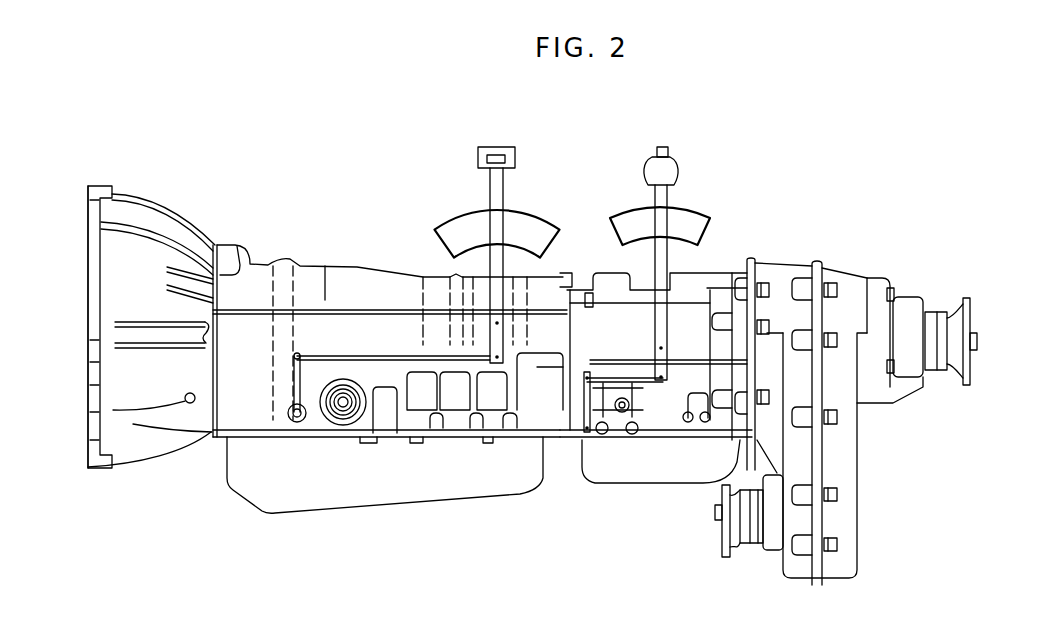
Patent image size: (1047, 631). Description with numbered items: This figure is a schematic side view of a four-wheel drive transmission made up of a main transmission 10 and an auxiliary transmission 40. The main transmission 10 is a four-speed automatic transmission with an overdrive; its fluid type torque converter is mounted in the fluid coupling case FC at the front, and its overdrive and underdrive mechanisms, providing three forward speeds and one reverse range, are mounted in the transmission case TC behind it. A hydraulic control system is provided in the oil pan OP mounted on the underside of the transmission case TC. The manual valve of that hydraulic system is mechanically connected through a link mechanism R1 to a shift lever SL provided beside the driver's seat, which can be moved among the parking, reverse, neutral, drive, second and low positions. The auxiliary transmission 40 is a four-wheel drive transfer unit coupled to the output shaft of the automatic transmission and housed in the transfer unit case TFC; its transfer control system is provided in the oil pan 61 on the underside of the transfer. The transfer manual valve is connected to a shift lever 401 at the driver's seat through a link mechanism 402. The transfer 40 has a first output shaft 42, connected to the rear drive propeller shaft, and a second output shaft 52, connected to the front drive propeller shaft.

The main transmission 10 is at (272, 193).
The fluid coupling case FC is at (142, 213).
The transmission case TC is at (358, 273).
The shift lever SL is at (503, 148).
The transfer unit case TFC is at (610, 273).
The shift lever 401 is at (670, 173).
The link mechanism 402 is at (618, 380).
The auxiliary transmission 40 is at (747, 218).
The first output shaft 42 is at (973, 312).
The second output shaft 52 is at (738, 518).
The oil pan 61 is at (640, 468).
The link mechanism R1 is at (398, 355).
The oil pan OP is at (425, 490).